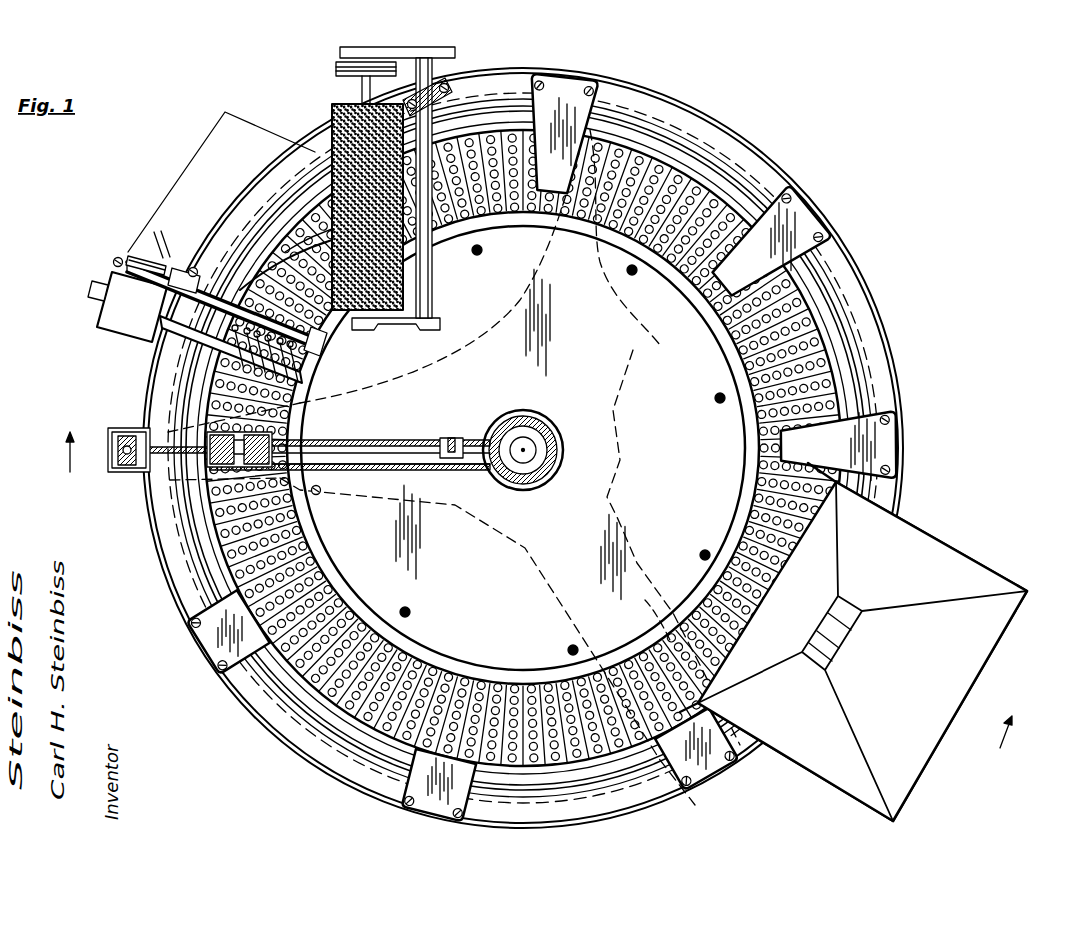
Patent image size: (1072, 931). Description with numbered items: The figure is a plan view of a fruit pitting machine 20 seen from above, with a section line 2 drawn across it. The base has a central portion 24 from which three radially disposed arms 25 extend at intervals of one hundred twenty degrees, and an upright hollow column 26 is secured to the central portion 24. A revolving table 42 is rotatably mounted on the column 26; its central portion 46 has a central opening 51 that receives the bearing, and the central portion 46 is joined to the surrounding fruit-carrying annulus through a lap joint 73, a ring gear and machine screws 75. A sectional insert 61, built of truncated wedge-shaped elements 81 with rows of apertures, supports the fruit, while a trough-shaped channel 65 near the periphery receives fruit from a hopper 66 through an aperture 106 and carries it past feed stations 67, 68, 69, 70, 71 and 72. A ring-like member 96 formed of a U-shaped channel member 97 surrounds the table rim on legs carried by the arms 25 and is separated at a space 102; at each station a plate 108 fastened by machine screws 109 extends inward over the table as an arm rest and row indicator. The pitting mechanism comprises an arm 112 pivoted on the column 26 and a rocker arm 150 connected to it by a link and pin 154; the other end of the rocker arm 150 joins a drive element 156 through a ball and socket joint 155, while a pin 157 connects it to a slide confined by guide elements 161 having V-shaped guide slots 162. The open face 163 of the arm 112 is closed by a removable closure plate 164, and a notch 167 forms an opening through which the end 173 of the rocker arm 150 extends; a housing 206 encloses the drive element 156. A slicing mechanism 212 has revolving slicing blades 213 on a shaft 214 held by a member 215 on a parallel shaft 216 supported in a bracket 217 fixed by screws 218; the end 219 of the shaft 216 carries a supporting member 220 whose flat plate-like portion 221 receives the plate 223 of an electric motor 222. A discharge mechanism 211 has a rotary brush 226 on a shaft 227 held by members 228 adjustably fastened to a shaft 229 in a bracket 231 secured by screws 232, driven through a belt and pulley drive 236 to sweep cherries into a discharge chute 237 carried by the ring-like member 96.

The section line 2 is at (528, 591).
The fruit pitting machine 20 is at (904, 336).
The central portion 24 is at (625, 468).
The radially disposed arms 25 is at (662, 344).
The upright hollow column 26 is at (550, 452).
The revolving table 42 is at (752, 189).
The central portion of table 46 is at (546, 442).
The central opening 51 is at (518, 412).
The sectional insert 61 is at (830, 320).
The trough-shaped channel 65 is at (146, 518).
The hopper 66 is at (853, 642).
The feed station 67 is at (588, 84).
The feed station 68 is at (836, 224).
The feed station 69 is at (908, 452).
The feed station 70 is at (702, 796).
The feed station 71 is at (415, 814).
The feed station 72 is at (192, 654).
The lap joint 73 is at (690, 622).
The machine screws 75 is at (480, 253).
The truncated wedge-shaped elements 81 is at (856, 370).
The ring-like member 96 is at (843, 277).
The U-shaped channel member 97 is at (845, 288).
The space 102 is at (172, 432).
The aperture 106 is at (836, 635).
The plate 108 is at (552, 451).
The machine screws 109 is at (546, 80).
The arm 112 is at (403, 489).
The rocker arm 150 is at (362, 440).
The pin 154 is at (452, 438).
The ball and socket joint 155 is at (116, 468).
The drive element 156 is at (120, 452).
The pin 157 is at (337, 488).
The guide elements 161 is at (265, 438).
The V-shaped guide slots 162 is at (270, 447).
The face 163 is at (462, 472).
The removable closure plate 164 is at (419, 478).
The notch 167 is at (172, 482).
The end of rocker arm 173 is at (138, 466).
The housing 206 is at (112, 444).
The discharge mechanism 211 is at (374, 201).
The slicing mechanism 212 is at (216, 294).
The revolving slicing blades 213 is at (312, 354).
The shaft 214 is at (185, 333).
The member 215 is at (305, 347).
The parallel shaft 216 is at (220, 299).
The bracket 217 is at (190, 268).
The screws 218 is at (200, 248).
The end of shaft 219 is at (177, 274).
The supporting member 220 is at (130, 250).
The flat plate-like portion 221 is at (114, 264).
The electric motor 222 is at (117, 302).
The plate 223 is at (112, 283).
The rotary brush 226 is at (332, 124).
The shaft 227 is at (362, 90).
The members 228 is at (456, 52).
The shaft 229 is at (426, 280).
The bracket 231 is at (426, 112).
The screws 232 is at (432, 92).
The belt and pulley drive 236 is at (336, 70).
The discharge chute 237 is at (208, 138).